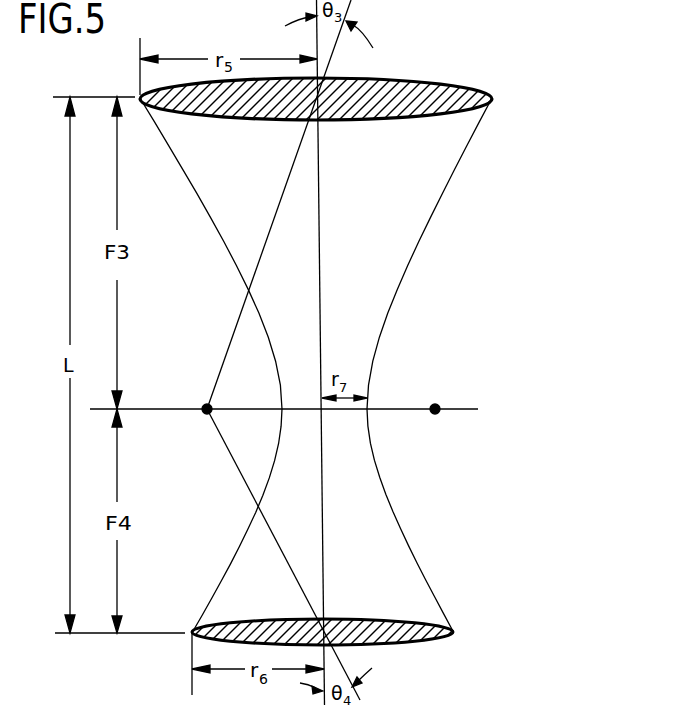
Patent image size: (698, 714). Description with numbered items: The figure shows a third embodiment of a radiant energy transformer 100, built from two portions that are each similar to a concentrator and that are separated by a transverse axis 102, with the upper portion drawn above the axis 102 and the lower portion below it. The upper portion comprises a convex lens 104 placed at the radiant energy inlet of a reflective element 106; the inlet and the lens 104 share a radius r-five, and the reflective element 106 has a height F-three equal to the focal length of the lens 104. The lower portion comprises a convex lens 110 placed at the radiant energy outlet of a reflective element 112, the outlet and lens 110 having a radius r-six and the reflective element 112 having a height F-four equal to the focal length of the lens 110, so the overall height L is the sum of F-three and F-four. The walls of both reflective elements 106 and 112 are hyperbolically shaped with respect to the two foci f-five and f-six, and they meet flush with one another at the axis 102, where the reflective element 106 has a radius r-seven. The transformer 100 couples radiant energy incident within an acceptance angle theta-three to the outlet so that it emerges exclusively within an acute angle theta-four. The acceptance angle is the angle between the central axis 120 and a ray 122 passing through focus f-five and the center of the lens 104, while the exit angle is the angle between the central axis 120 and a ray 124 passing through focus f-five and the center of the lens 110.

The radiant energy transformer 100 is at (177, 33).
The transverse axis 102 is at (398, 409).
The convex lens 104 is at (396, 108).
The reflective element 106 is at (440, 258).
The convex lens 110 is at (350, 619).
The reflective element 112 is at (414, 505).
The central axis 120 is at (322, 240).
The ray 122 is at (236, 327).
The ray 124 is at (240, 477).